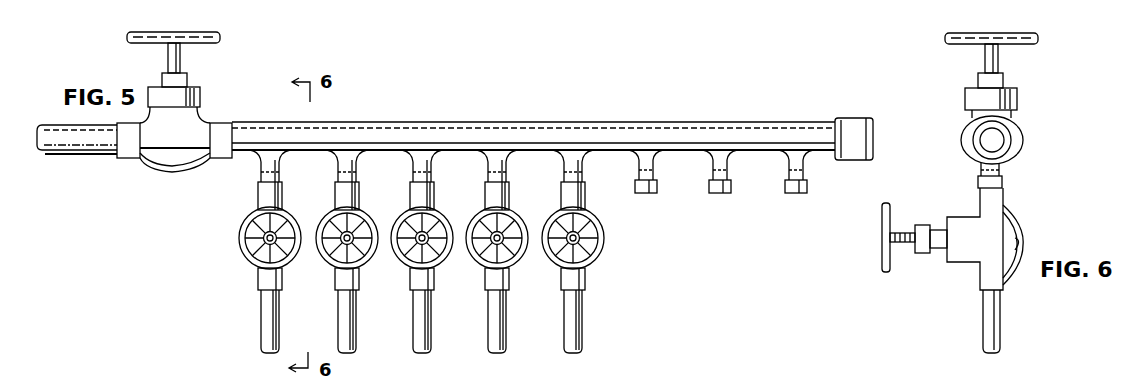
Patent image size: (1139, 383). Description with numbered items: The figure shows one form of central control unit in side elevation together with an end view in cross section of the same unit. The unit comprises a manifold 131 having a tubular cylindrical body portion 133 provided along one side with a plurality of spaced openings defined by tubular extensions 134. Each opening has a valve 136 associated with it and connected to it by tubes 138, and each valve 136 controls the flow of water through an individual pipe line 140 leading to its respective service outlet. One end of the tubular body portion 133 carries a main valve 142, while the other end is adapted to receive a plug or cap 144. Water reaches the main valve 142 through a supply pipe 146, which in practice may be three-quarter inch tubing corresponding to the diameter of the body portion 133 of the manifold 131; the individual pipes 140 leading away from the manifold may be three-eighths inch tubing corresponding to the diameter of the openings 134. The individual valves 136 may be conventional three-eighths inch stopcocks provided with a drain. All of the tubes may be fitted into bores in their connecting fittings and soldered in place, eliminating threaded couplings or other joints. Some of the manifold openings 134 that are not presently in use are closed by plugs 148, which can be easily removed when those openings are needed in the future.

In FIG. 5, the manifold 131 is at (550, 91).
In FIG. 5, the tubular cylindrical body portion 133 is at (600, 122).
In FIG. 6, the tubular cylindrical body portion 133 is at (1008, 138).
In FIG. 5, the tubular extensions 134 is at (258, 175).
In FIG. 6, the tubular extensions 134 is at (982, 166).
In FIG. 5, the valve 136 is at (242, 252).
In FIG. 6, the valve 136 is at (965, 256).
In FIG. 5, the tubes 138 is at (258, 190).
In FIG. 6, the tubes 138 is at (979, 183).
In FIG. 5, the individual pipe lines 140 is at (279, 322).
In FIG. 6, the individual pipe lines 140 is at (985, 334).
In FIG. 5, the main valve 142 is at (172, 160).
In FIG. 6, the main valve 142 is at (966, 122).
In FIG. 5, the plug or cap 144 is at (876, 134).
In FIG. 5, the supply pipe 146 is at (74, 156).
In FIG. 5, the plugs 148 is at (713, 196).